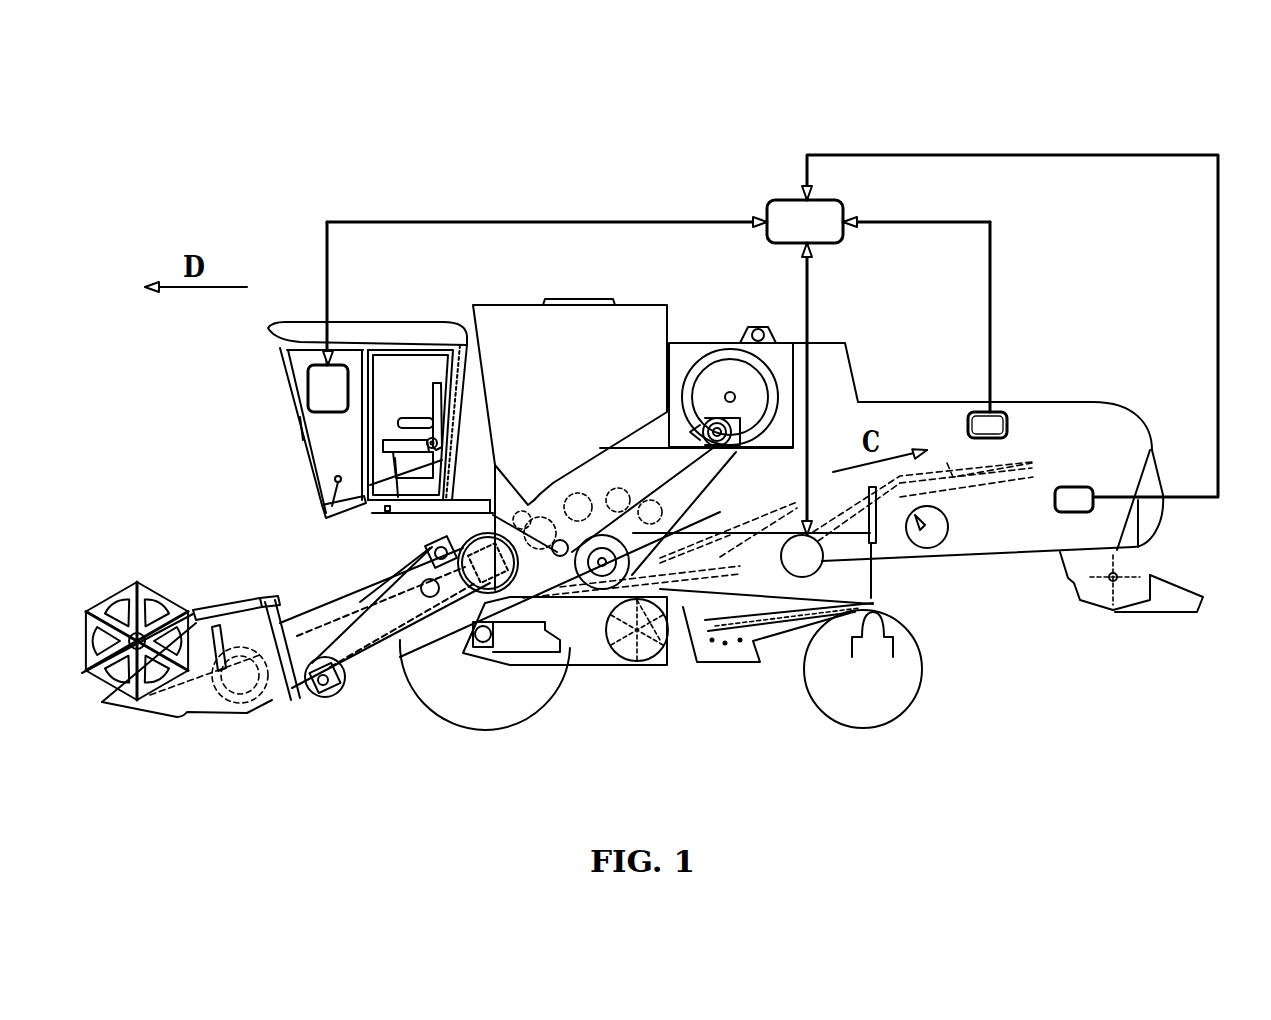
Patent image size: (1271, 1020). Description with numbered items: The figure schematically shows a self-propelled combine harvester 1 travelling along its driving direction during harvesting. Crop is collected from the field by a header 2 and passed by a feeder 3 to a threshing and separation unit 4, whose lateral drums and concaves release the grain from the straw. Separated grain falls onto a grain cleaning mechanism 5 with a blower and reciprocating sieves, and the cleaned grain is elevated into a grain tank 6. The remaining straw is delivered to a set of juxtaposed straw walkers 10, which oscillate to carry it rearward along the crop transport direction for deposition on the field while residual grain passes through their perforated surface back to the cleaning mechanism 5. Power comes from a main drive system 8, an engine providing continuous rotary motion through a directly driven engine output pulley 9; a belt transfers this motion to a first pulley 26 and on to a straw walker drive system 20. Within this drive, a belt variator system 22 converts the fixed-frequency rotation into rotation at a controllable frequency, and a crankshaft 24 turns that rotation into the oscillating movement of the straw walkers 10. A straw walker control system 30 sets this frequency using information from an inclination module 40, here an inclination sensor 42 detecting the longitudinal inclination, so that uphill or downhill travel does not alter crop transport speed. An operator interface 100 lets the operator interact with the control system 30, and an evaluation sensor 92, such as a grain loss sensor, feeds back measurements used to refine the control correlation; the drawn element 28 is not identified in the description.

The combine harvester 1 is at (1105, 136).
The header 2 is at (147, 572).
The feeder 3 is at (354, 588).
The threshing and separation unit 4 is at (560, 470).
The grain cleaning mechanism 5 is at (735, 671).
The grain tank 6 is at (657, 315).
The main drive system 8 is at (712, 345).
The engine output pulley 9 is at (687, 468).
The straw walkers 10 is at (1018, 468).
The straw walker drive system 20 is at (895, 565).
The belt variator system 22 is at (818, 565).
The crankshaft 24 is at (948, 518).
The first pulley 26 is at (667, 665).
The return pan 28 is at (940, 540).
The straw walker control system 30 is at (790, 205).
The inclination module 40 is at (998, 412).
The inclination sensor 42 is at (975, 412).
The evaluation sensor 92 is at (1068, 513).
The operator interface 100 is at (313, 390).